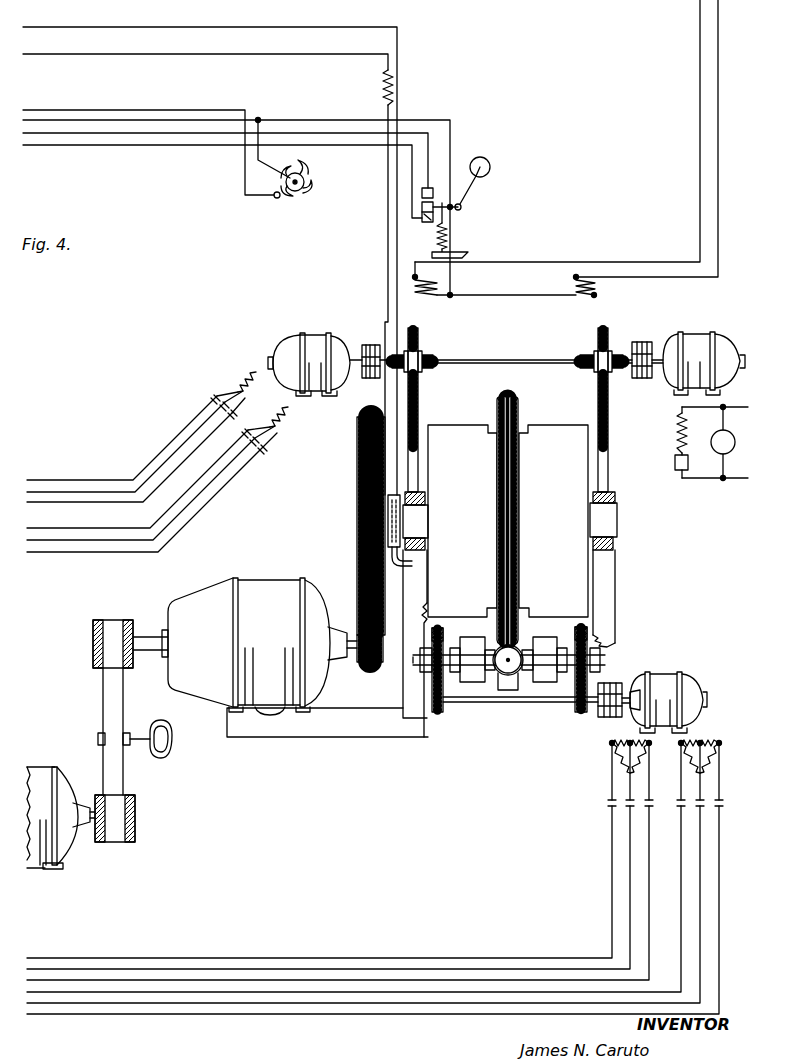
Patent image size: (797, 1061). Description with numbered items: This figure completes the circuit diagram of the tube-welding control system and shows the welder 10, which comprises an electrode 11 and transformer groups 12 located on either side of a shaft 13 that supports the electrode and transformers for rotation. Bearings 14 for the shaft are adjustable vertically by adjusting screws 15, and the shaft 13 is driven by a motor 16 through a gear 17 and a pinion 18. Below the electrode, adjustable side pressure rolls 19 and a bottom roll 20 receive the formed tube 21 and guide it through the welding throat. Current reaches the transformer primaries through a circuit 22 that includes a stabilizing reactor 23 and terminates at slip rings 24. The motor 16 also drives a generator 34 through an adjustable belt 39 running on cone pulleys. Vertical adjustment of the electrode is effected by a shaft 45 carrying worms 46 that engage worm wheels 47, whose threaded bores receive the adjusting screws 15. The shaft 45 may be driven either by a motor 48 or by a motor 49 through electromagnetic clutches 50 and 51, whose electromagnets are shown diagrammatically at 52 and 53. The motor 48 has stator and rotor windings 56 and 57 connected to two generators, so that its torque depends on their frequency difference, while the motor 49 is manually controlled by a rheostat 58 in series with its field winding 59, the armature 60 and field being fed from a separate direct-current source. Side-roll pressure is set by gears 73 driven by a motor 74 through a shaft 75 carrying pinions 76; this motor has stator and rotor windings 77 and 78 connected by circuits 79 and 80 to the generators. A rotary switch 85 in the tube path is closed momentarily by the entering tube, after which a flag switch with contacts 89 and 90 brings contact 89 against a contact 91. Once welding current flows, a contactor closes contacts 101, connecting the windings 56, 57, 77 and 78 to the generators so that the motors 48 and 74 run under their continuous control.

The welder 10 is at (657, 560).
The electrode 11 is at (516, 406).
The transformer groups 12 is at (446, 440).
The shaft 13 is at (412, 513).
The bearings 14 is at (413, 583).
The adjusting screws 15 is at (420, 388).
The motor 16 is at (259, 592).
The gear 17 is at (365, 549).
The pinion 18 is at (370, 662).
The side pressure rolls 19 is at (486, 684).
The bottom roll 20 is at (508, 690).
The formed tube 21 is at (522, 650).
The circuit 22 is at (255, 27).
The stabilizing reactor 23 is at (384, 88).
The slip rings 24 is at (412, 566).
The generator 34 is at (38, 777).
The adjustable belt 39 is at (103, 695).
The shaft 45 is at (505, 354).
The worms 46 is at (431, 355).
The worm wheels 47 is at (430, 352).
The motor 48 is at (311, 340).
The motor 49 is at (695, 340).
The electromagnetic clutch 50 is at (372, 345).
The electromagnetic clutch 51 is at (643, 342).
The clutch electromagnet 52 is at (422, 297).
The clutch electromagnet 53 is at (596, 291).
The stator winding 56 is at (240, 386).
The rotor winding 57 is at (281, 421).
The rheostat 58 is at (675, 462).
The field winding 59 is at (680, 437).
The armature 60 is at (735, 442).
The gear 73 is at (438, 628).
The motor 74 is at (664, 680).
The shaft 75 is at (559, 704).
The pinions 76 is at (438, 712).
The stator winding 77 is at (620, 758).
The rotor winding 78 is at (712, 758).
The circuit 79 is at (45, 980).
The circuit 80 is at (52, 1016).
The rotary switch 85 is at (304, 178).
The contact 89 is at (422, 207).
The contact 90 is at (422, 220).
The contact 91 is at (422, 193).
The contacts 101 is at (212, 396).